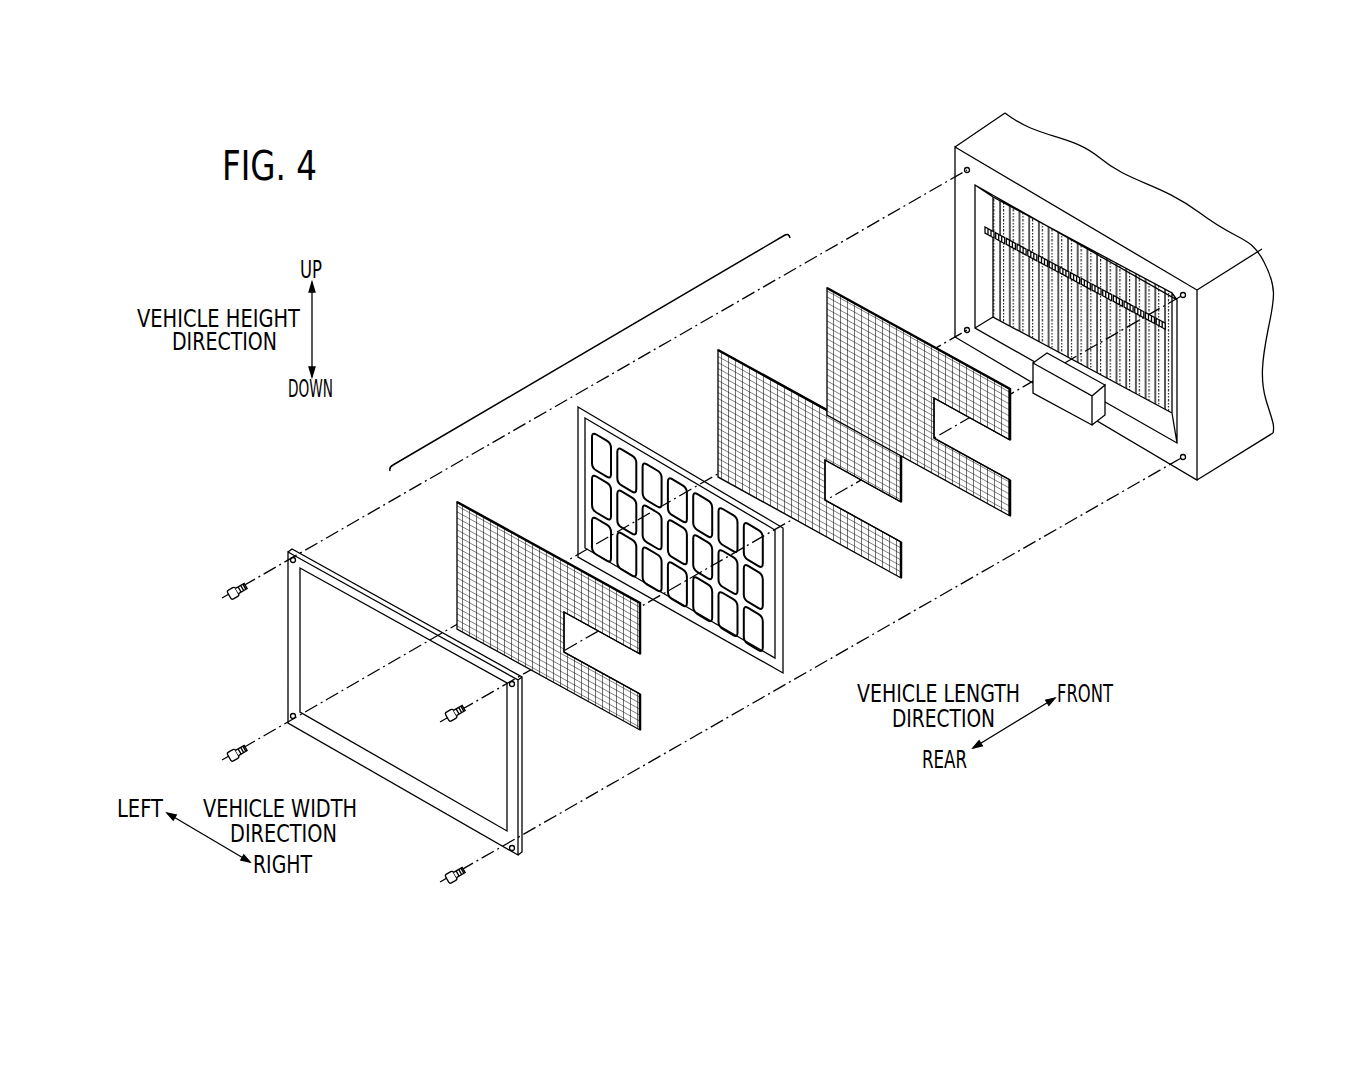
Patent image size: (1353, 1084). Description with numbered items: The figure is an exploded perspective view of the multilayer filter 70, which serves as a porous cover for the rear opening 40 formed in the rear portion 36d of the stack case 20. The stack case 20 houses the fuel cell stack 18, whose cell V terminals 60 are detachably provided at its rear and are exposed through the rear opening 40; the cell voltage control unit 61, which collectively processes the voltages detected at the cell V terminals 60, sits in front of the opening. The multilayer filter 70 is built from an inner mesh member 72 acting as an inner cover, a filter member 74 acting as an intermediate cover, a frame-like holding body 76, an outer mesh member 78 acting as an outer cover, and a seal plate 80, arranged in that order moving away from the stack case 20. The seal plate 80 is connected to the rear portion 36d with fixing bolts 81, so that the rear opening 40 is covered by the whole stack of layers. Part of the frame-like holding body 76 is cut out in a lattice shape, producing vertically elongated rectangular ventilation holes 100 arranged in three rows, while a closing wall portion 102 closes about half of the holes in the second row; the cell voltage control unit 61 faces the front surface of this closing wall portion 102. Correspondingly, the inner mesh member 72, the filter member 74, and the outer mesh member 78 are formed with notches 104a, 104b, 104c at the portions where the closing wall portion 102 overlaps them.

The stack case 20 is at (1120, 309).
The rear portion 36d is at (995, 190).
The rear opening 40 is at (1048, 235).
The fuel cell stack 18 is at (1092, 292).
The cell V terminals 60 is at (1152, 318).
The cell voltage control unit 61 is at (1092, 426).
The multilayer filter 70 is at (593, 347).
The inner mesh member 72 is at (952, 402).
The filter member 74 is at (841, 464).
The frame-like holding body 76 is at (676, 532).
The outer mesh member 78 is at (574, 616).
The seal plate 80 is at (522, 753).
The fixing bolts 81 is at (450, 873).
The ventilation holes 100 is at (627, 462).
The closing wall portion 102 is at (760, 590).
The notch 104a is at (990, 436).
The notch 104b is at (895, 503).
The notch 104c is at (637, 690).